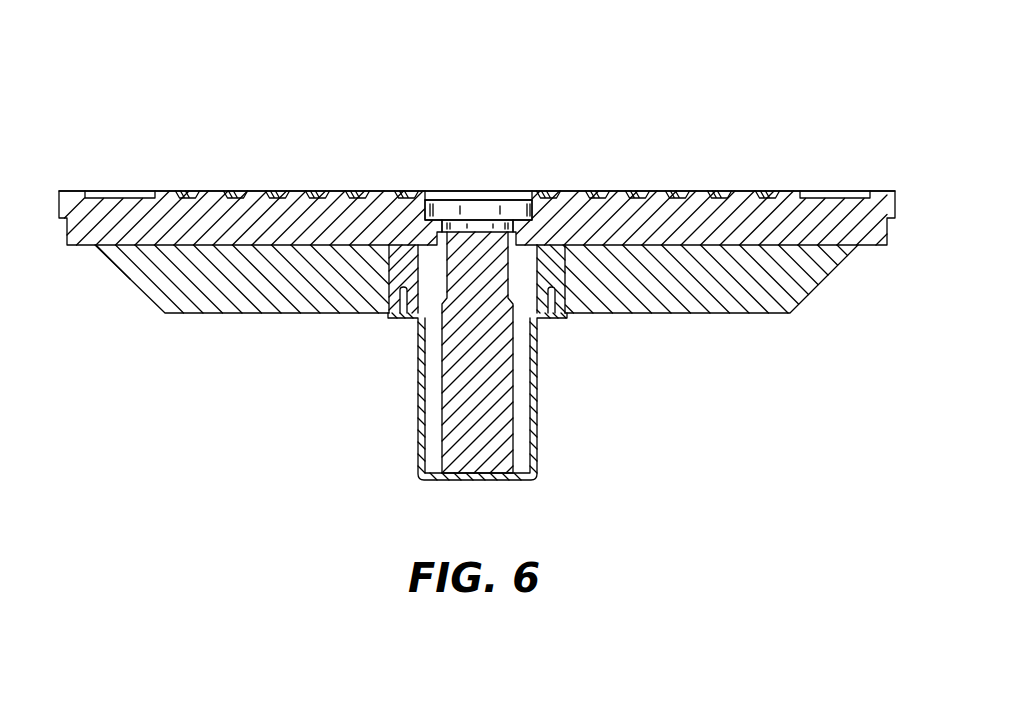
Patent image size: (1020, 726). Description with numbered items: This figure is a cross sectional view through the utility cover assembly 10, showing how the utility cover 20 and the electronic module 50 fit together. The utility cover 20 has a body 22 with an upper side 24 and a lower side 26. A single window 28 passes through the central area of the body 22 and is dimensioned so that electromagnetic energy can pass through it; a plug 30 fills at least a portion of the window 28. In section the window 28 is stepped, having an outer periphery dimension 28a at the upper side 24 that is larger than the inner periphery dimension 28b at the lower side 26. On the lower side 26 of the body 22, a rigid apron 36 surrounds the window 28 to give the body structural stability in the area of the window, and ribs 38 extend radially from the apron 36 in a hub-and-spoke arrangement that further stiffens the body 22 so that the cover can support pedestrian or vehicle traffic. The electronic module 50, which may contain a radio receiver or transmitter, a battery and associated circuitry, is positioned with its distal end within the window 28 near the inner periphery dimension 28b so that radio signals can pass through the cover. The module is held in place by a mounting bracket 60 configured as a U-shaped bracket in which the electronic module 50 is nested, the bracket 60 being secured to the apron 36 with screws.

The utility cover assembly 10 is at (153, 82).
The utility cover 20 is at (67, 238).
The body 22 is at (898, 203).
The upper side 24 is at (879, 191).
The lower side 26 is at (868, 247).
The window 28 is at (424, 212).
The outer periphery dimension 28a is at (535, 207).
The inner periphery dimension 28b is at (515, 227).
The plug 30 is at (473, 208).
The rigid apron 36 is at (398, 263).
The ribs 38 is at (233, 302).
The electronic module 50 is at (513, 433).
The mounting bracket 60 is at (418, 434).